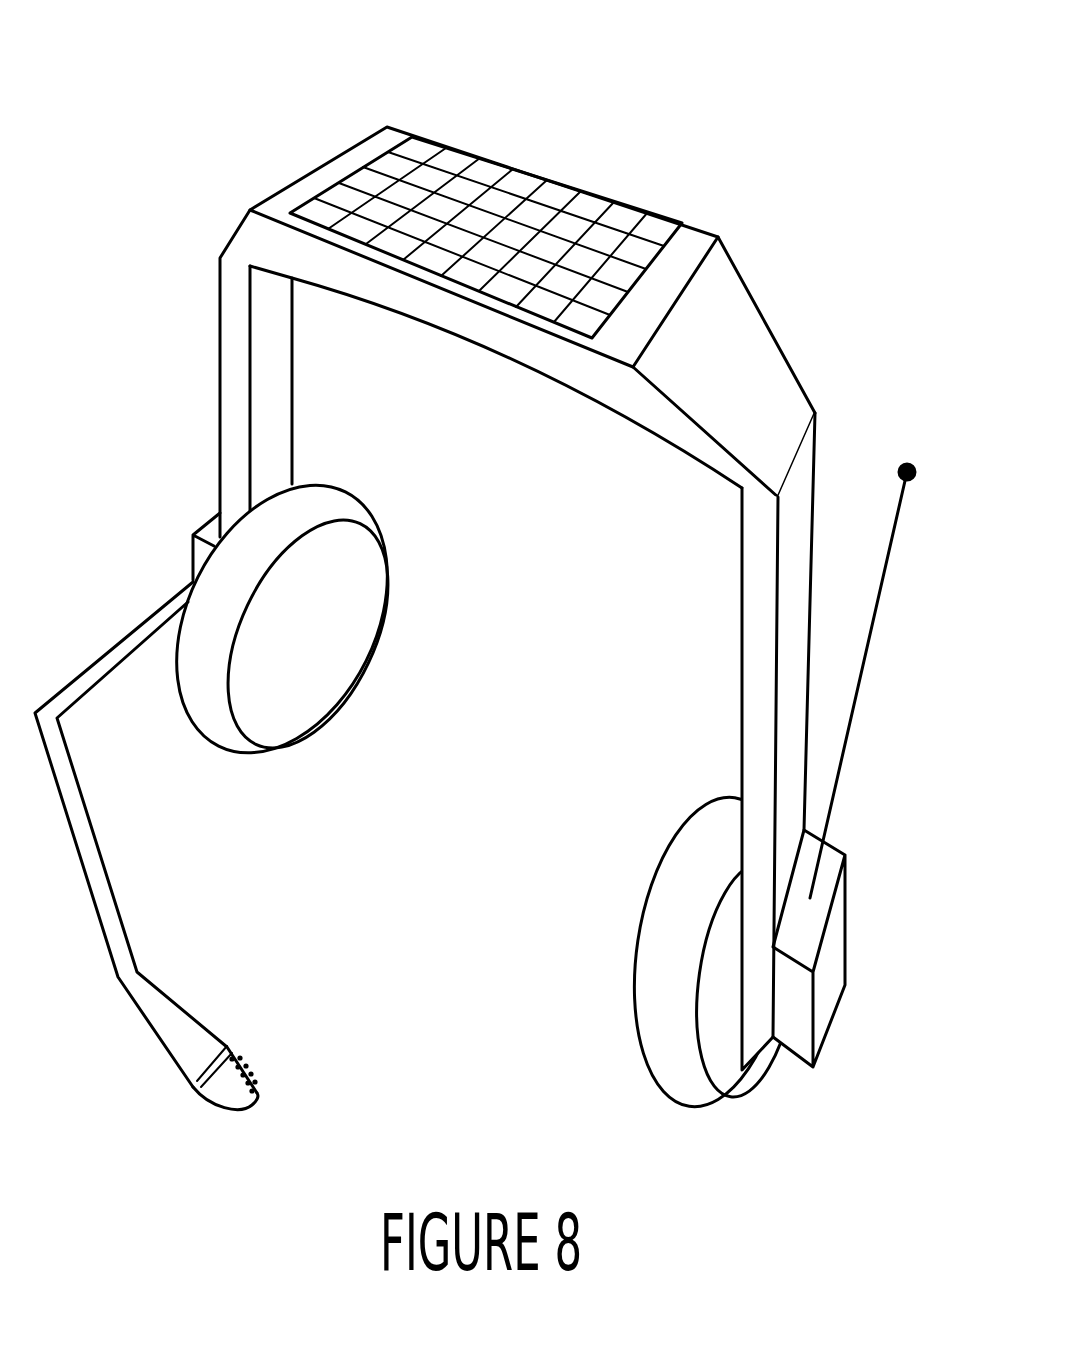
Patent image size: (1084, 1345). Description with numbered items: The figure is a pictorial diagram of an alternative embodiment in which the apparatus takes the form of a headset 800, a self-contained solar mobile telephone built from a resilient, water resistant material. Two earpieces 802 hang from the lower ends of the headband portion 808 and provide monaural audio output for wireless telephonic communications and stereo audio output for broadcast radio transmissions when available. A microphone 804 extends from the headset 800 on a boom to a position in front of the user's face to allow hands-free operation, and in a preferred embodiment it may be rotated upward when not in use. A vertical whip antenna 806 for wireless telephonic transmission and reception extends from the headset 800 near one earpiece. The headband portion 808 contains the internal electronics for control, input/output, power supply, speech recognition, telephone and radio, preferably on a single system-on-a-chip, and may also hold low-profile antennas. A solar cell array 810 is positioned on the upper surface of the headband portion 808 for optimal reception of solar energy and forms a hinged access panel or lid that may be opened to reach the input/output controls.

The headset 800 is at (501, 559).
The earpieces 802 is at (672, 847).
The microphone 804 is at (232, 1057).
The vertical whip antenna 806 is at (883, 585).
The headband portion 808 is at (563, 362).
The solar cell array 810 is at (538, 203).